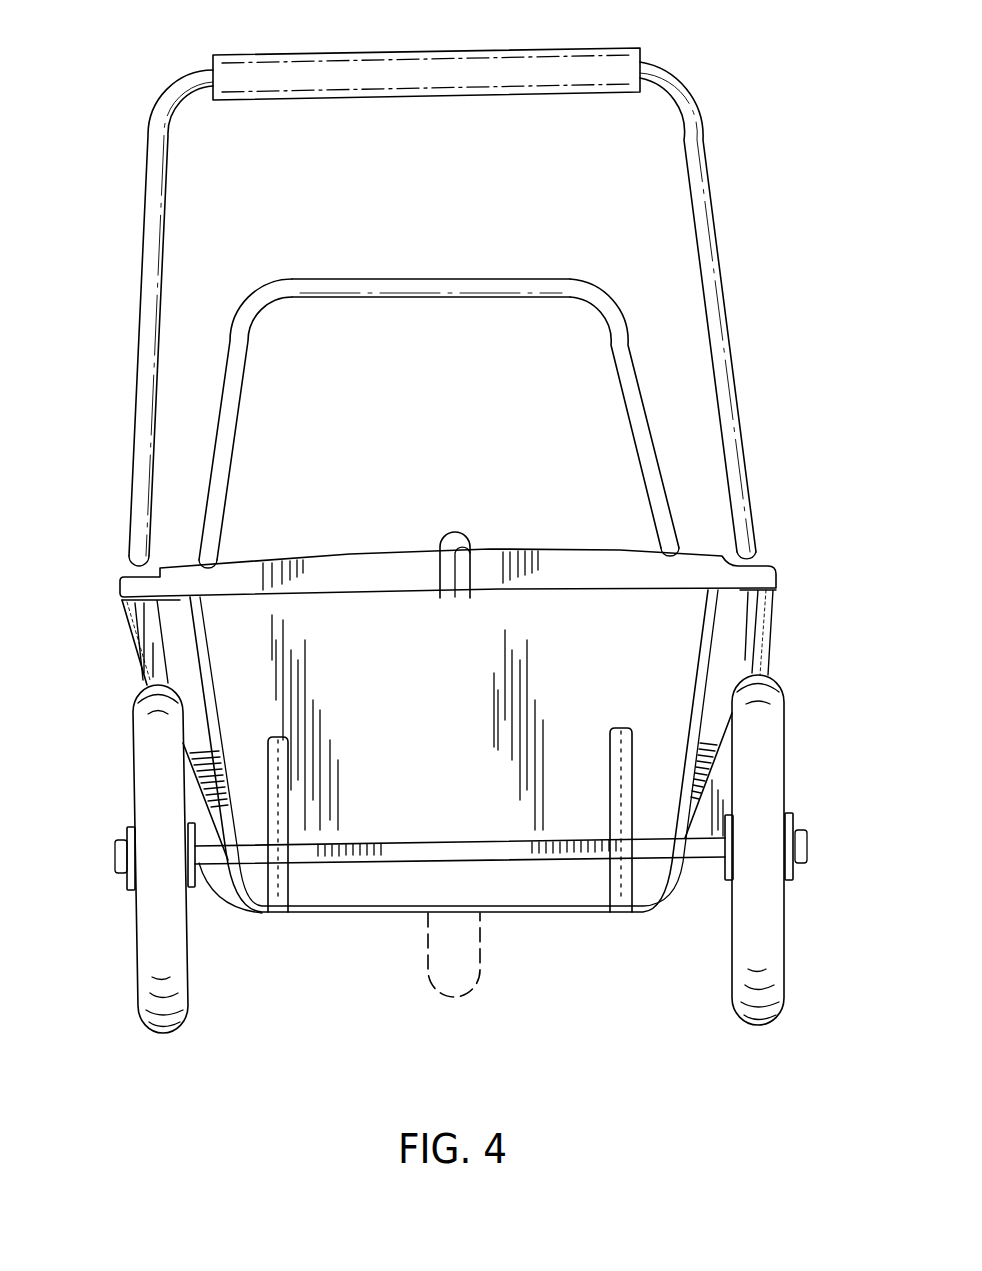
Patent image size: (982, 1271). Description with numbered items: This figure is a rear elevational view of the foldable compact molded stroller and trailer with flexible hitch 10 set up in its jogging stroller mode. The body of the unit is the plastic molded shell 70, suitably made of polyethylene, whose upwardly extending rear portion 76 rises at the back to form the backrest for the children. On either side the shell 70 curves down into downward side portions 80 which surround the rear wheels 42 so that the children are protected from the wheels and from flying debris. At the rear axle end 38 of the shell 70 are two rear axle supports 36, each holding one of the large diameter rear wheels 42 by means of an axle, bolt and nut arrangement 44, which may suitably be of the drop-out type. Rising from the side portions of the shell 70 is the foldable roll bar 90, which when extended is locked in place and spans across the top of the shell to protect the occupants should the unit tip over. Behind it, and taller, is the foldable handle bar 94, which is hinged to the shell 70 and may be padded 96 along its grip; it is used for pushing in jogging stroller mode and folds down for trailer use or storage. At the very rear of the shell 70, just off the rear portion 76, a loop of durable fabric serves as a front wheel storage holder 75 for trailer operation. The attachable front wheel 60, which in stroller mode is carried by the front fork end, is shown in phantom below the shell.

The foldable compact molded stroller and trailer with flexible hitch 10 is at (781, 165).
The rear axle support 36 is at (282, 912).
The rear axle end 38 is at (413, 853).
The rear wheel 42 is at (188, 1020).
The axle, bolt and nut arrangement 44 is at (115, 853).
The front wheel 60 is at (458, 997).
The plastic molded shell 70 is at (792, 571).
The front wheel storage holder 75 is at (452, 537).
The upwardly extending rear portion 76 is at (317, 621).
The downward side portion 80 is at (130, 652).
The foldable roll bar 90 is at (440, 285).
The foldable handle bar 94 is at (720, 301).
The padding 96 is at (525, 63).